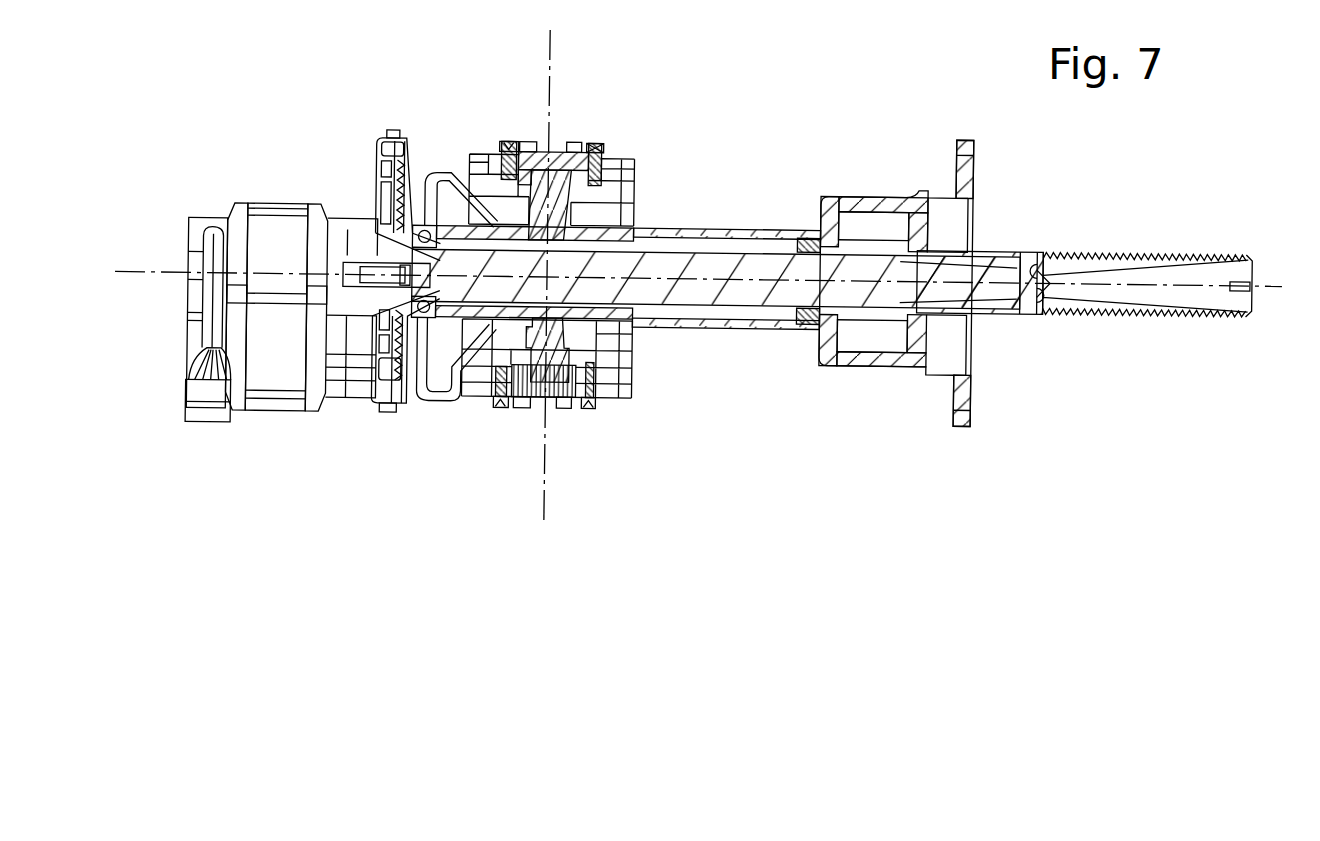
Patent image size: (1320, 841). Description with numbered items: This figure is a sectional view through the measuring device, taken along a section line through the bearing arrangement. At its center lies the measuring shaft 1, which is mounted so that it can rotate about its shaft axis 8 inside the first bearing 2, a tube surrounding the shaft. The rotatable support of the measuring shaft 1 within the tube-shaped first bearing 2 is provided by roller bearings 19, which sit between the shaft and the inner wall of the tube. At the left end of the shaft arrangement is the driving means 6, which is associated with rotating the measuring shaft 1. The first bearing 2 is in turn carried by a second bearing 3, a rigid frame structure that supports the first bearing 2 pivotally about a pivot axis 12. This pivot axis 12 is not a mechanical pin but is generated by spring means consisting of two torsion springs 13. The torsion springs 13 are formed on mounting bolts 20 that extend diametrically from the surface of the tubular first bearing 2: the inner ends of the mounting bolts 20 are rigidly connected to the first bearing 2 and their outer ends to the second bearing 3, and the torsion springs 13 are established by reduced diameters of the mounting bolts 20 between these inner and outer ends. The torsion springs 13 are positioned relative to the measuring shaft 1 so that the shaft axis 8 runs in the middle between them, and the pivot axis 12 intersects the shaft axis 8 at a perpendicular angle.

The measuring shaft 1 is at (692, 262).
The first bearing 2 is at (721, 328).
The second bearing 3 is at (636, 157).
The driving means 6 is at (293, 172).
The shaft axis 8 is at (752, 284).
The pivot axis 12 is at (547, 503).
The torsion springs 13 is at (522, 157).
The roller bearings 19 is at (396, 130).
The mounting bolts 20 is at (560, 329).